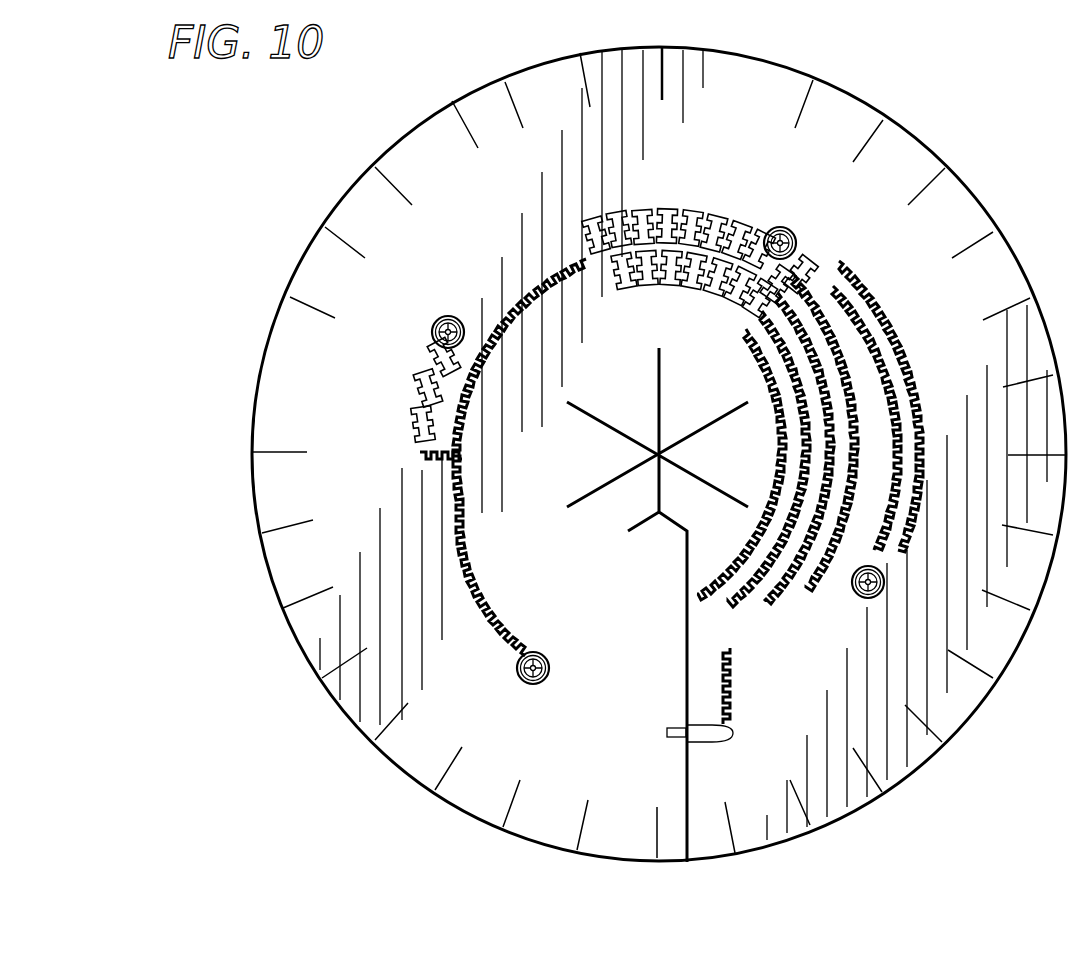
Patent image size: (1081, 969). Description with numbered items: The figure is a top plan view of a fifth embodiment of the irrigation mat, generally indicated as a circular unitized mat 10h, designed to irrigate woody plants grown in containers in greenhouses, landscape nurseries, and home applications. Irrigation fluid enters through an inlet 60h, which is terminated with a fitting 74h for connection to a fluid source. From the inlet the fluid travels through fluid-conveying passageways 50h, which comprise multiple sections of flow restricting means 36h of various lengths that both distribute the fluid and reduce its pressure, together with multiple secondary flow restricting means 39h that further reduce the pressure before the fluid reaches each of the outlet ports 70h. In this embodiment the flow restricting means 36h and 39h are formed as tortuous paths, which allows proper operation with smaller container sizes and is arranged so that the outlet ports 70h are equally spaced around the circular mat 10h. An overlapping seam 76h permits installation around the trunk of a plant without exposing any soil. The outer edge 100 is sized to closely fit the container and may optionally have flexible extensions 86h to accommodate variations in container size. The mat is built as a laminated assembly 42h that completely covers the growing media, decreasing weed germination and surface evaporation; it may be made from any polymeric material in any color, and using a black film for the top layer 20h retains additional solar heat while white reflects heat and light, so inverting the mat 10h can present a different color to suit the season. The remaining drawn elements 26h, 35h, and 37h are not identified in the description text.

The outer edge 100 is at (604, 454).
The circular unitized mat 10h is at (280, 280).
The top layer 20h is at (345, 193).
The roller hub 26h is at (437, 320).
The crenellated chain band 35h is at (734, 344).
The flow restricting means 36h is at (558, 272).
The puzzle piece rows 37h is at (712, 208).
The secondary flow restricting means 39h is at (424, 385).
The laminated assembly 42h is at (457, 102).
The fluid-conveying passageways 50h is at (765, 220).
The inlet 60h is at (733, 737).
The outlet ports 70h is at (613, 430).
The fitting 74h is at (673, 740).
The overlapping seam 76h is at (615, 672).
The flexible extensions 86h is at (285, 455).